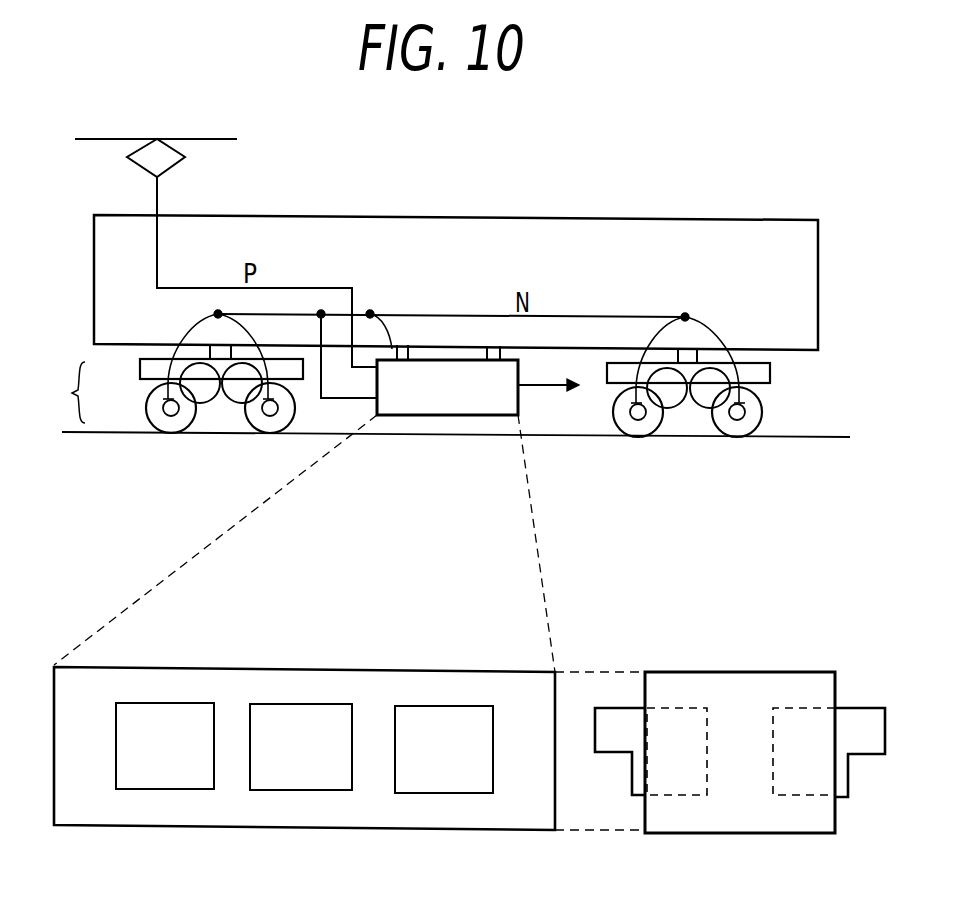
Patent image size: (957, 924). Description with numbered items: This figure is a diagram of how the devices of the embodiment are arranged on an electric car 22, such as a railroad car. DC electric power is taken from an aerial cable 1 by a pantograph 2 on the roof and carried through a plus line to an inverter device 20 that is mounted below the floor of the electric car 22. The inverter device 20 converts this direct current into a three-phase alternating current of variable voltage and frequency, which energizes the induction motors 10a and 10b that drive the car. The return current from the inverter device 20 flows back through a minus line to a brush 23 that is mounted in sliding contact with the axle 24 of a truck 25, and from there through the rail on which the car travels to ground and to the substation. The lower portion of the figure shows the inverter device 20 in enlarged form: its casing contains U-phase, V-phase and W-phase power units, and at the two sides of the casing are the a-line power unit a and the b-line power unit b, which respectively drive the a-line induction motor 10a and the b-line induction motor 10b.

The aerial cable 1 is at (203, 139).
The pantograph 2 is at (183, 158).
The electric car 22 is at (612, 220).
The inverter device 20 is at (469, 610).
The induction motor 10a is at (705, 408).
The induction motor 10b is at (172, 400).
The brush 23 is at (152, 392).
The axle 24 is at (161, 407).
The truck 25 is at (63, 392).
The a-line power unit a is at (850, 708).
The b-line power unit b is at (615, 708).